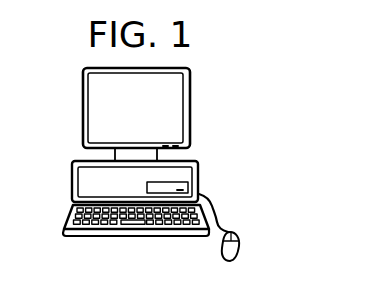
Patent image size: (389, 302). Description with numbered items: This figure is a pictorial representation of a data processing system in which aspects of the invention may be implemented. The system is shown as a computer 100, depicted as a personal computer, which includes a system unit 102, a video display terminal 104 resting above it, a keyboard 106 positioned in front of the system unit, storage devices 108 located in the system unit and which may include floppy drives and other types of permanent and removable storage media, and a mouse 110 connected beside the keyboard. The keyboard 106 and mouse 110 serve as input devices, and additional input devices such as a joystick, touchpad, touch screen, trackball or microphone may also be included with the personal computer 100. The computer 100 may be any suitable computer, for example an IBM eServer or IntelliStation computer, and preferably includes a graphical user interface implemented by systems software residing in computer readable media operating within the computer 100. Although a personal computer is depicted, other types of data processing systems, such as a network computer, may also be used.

The computer 100 is at (292, 110).
The system unit 102 is at (73, 182).
The video display terminal 104 is at (190, 108).
The keyboard 106 is at (98, 237).
The storage devices 108 is at (174, 180).
The mouse 110 is at (241, 251).